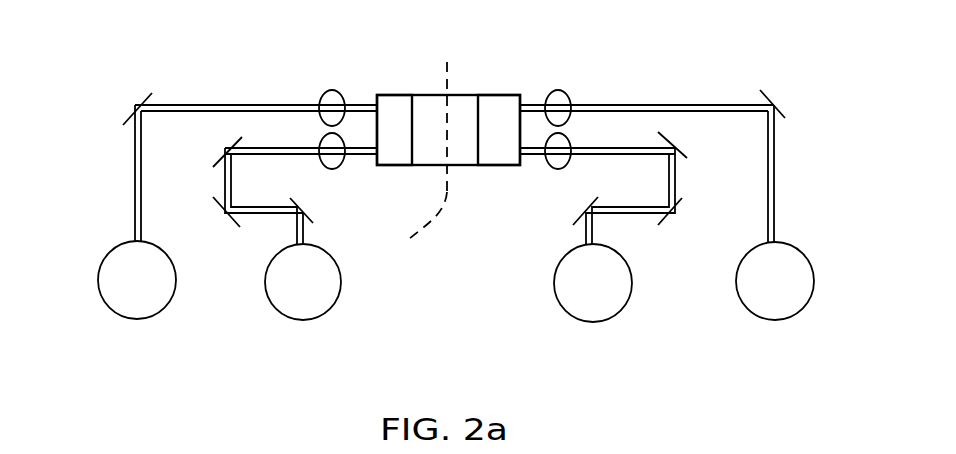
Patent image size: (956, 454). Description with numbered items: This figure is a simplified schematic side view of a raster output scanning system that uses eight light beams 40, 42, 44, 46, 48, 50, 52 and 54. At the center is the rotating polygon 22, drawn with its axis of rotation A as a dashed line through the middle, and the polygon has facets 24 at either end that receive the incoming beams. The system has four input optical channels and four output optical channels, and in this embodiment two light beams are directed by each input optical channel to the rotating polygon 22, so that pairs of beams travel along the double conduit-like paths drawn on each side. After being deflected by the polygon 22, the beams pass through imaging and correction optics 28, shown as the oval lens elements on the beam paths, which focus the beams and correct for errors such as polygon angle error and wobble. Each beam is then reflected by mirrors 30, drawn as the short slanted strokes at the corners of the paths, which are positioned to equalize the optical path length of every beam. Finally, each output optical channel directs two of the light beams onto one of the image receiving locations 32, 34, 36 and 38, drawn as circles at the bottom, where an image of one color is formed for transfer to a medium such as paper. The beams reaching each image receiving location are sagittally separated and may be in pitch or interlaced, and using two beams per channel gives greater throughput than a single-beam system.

The rotating polygon 22 is at (490, 95).
The facets 24 is at (398, 165).
The axis of rotation A is at (417, 163).
The imaging and correction optics 28 is at (334, 92).
The mirrors 30 is at (130, 118).
The image receiving location 32 is at (137, 320).
The image receiving location 34 is at (305, 320).
The image receiving location 36 is at (592, 322).
The image receiving location 38 is at (778, 320).
The light beam 40 is at (236, 105).
The light beam 42 is at (192, 112).
The light beam 44 is at (263, 148).
The light beam 46 is at (285, 155).
The light beam 48 is at (635, 105).
The light beam 50 is at (649, 112).
The light beam 52 is at (620, 148).
The light beam 54 is at (610, 154).